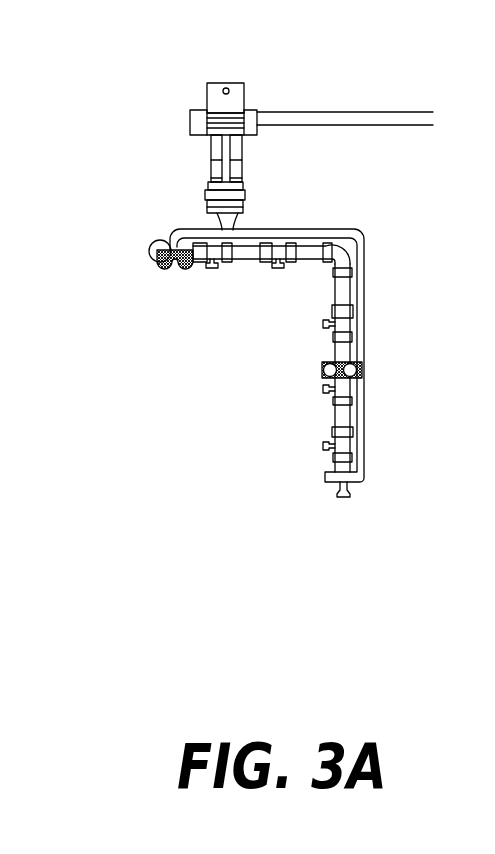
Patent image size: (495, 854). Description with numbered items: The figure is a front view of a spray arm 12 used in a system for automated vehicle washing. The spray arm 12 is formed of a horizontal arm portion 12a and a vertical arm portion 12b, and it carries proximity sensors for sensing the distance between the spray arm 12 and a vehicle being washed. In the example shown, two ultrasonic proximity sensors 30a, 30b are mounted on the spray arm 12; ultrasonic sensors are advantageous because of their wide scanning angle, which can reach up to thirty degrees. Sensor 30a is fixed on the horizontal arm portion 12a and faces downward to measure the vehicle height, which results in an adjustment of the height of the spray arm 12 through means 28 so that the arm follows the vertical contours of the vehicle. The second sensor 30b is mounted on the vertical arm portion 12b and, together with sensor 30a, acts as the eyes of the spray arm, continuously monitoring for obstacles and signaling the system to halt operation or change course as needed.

The spray arm 12 is at (383, 219).
The means 28 is at (197, 127).
The horizontal arm portion 12a is at (250, 258).
The vertical arm portion 12b is at (333, 458).
The proximity sensor 30a is at (163, 267).
The second sensor 30b is at (322, 369).